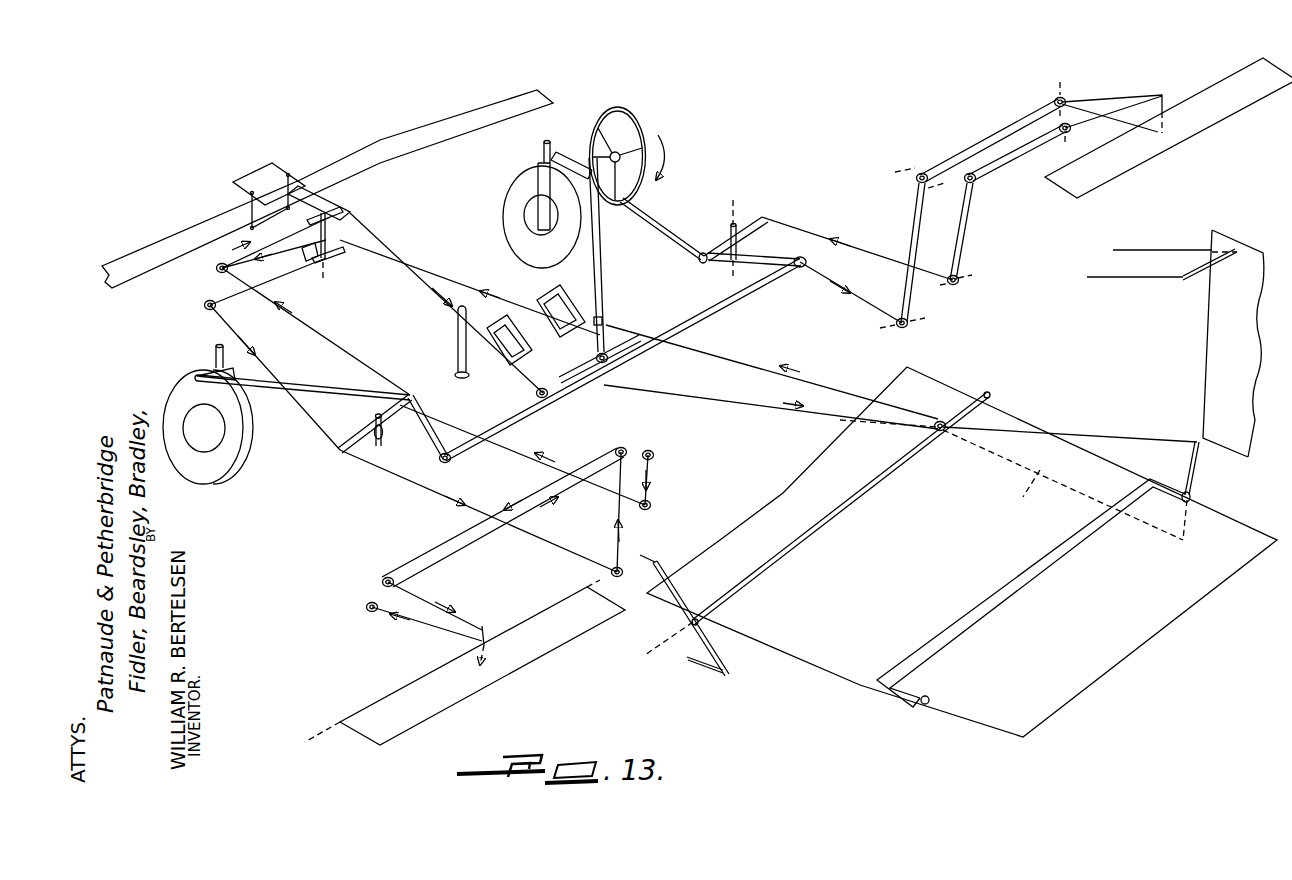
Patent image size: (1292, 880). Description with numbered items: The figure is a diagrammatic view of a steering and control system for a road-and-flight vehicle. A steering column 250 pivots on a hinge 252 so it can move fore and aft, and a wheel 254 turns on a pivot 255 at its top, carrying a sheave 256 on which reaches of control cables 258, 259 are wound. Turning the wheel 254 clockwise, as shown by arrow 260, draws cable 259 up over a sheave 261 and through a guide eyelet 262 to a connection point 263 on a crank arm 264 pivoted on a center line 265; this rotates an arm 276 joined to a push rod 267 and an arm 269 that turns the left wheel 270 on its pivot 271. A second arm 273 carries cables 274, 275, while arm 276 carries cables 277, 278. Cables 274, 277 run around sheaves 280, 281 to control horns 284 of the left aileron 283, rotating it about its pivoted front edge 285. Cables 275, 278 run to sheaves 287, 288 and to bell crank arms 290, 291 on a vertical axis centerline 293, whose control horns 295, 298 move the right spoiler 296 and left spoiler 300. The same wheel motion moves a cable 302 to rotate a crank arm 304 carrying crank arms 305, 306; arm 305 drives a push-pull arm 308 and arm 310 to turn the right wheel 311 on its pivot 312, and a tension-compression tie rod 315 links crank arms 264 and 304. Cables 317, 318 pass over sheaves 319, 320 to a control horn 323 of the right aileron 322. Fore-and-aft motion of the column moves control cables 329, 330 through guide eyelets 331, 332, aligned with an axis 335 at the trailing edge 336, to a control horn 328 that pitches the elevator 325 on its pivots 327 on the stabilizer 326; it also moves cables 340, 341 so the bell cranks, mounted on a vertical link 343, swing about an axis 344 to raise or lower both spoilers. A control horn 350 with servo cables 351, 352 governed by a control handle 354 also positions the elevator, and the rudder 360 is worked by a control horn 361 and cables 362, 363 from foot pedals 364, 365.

The steering column 250 is at (602, 290).
The hinge 252 is at (606, 340).
The wheel 254 is at (642, 118).
The pivot 255 is at (580, 155).
The sheave 256 is at (612, 150).
The control cable 258 is at (555, 336).
The control cable 259 is at (598, 247).
The arrow 260 is at (665, 142).
The sheave 261 is at (612, 362).
The guide eyelet 262 is at (541, 389).
The connection point 263 is at (457, 437).
The crank arm 264 is at (447, 463).
The center line 265 is at (375, 415).
The push rod 267 is at (300, 385).
The arm 269 is at (198, 376).
The wheel 270 is at (240, 468).
The pivot 271 is at (215, 356).
The second arm 273 is at (374, 442).
The cable 274 is at (365, 480).
The cable 275 is at (318, 426).
The arm 276 is at (400, 408).
The cable 277 is at (520, 442).
The cable 278 is at (333, 332).
The sheave 280 is at (627, 450).
The sheave 281 is at (655, 455).
The left aileron 283 is at (388, 700).
The control horns 284 is at (478, 636).
The pivoted front edge 285 is at (555, 600).
The sheave 287 is at (204, 306).
The sheave 288 is at (216, 268).
The bell crank arm 290 is at (305, 262).
The bell crank arm 291 is at (322, 210).
The vertical axis centerline 293 is at (340, 212).
The control horn 295 is at (270, 180).
The right spoiler 296 is at (408, 130).
The control horn 298 is at (250, 197).
The left spoiler 300 is at (162, 242).
The cable 302 is at (718, 303).
The crank arm 304 is at (806, 264).
The crank arm 305 is at (728, 242).
The crank arm 306 is at (760, 217).
The push-pull arm 308 is at (655, 222).
The arm 310 is at (553, 143).
The wheel 311 is at (510, 203).
The pivot 312 is at (538, 160).
The tension-compression tie rod 315 is at (735, 320).
The cable 317 is at (872, 323).
The cable 318 is at (878, 260).
The sheaves 319 is at (918, 172).
The sheaves 320 is at (1068, 133).
The right aileron 322 is at (1240, 75).
The control horn 323 is at (1165, 96).
The elevator 325 is at (1092, 676).
The stabilizer 326 is at (850, 585).
The pivots 327 is at (1195, 497).
The control horn 328 is at (1188, 475).
The control cable 329 is at (1100, 433).
The control cable 330 is at (1063, 485).
The guide eyelet 331 is at (940, 420).
The guide eyelet 332 is at (940, 432).
The axis 335 is at (690, 630).
The trailing edge 336 is at (800, 490).
The cable 340 is at (460, 284).
The cable 341 is at (383, 258).
The vertical link 343 is at (345, 222).
The axis 344 is at (342, 250).
The control horn 350 is at (688, 592).
The cable 351 is at (650, 558).
The cable 352 is at (715, 675).
The control handle 354 is at (458, 346).
The rudder 360 is at (1240, 245).
The control horn 361 is at (1185, 266).
The cable 362 is at (1128, 278).
The cable 363 is at (570, 305).
The foot pedal 364 is at (512, 318).
The foot pedal 365 is at (540, 302).